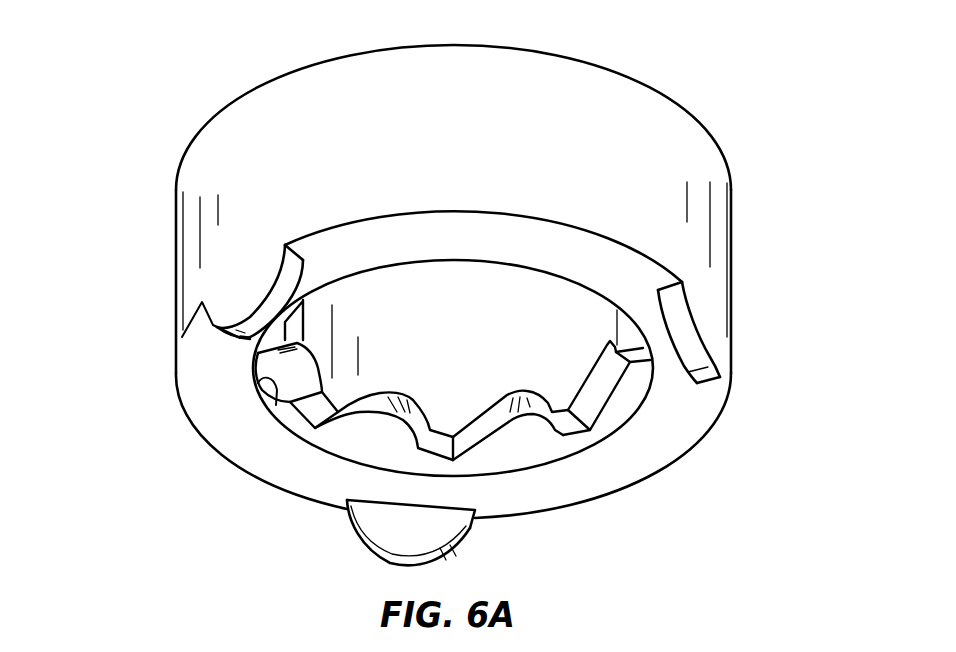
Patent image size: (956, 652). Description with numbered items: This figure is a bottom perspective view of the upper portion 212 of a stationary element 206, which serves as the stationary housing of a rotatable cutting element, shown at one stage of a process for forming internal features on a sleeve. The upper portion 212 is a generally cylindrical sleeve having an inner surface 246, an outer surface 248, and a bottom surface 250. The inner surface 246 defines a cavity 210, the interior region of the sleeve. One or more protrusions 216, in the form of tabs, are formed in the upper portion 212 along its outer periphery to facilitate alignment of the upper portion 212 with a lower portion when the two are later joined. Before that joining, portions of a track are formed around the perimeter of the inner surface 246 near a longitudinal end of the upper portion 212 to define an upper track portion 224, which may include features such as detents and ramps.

The stationary element 206 is at (155, 107).
The cavity 210 is at (465, 338).
The upper portion 212 is at (670, 192).
The protrusions 216 is at (242, 297).
The upper track portion 224 is at (562, 377).
The inner surface 246 is at (290, 405).
The outer surface 248 is at (240, 184).
The bottom surface 250 is at (612, 270).